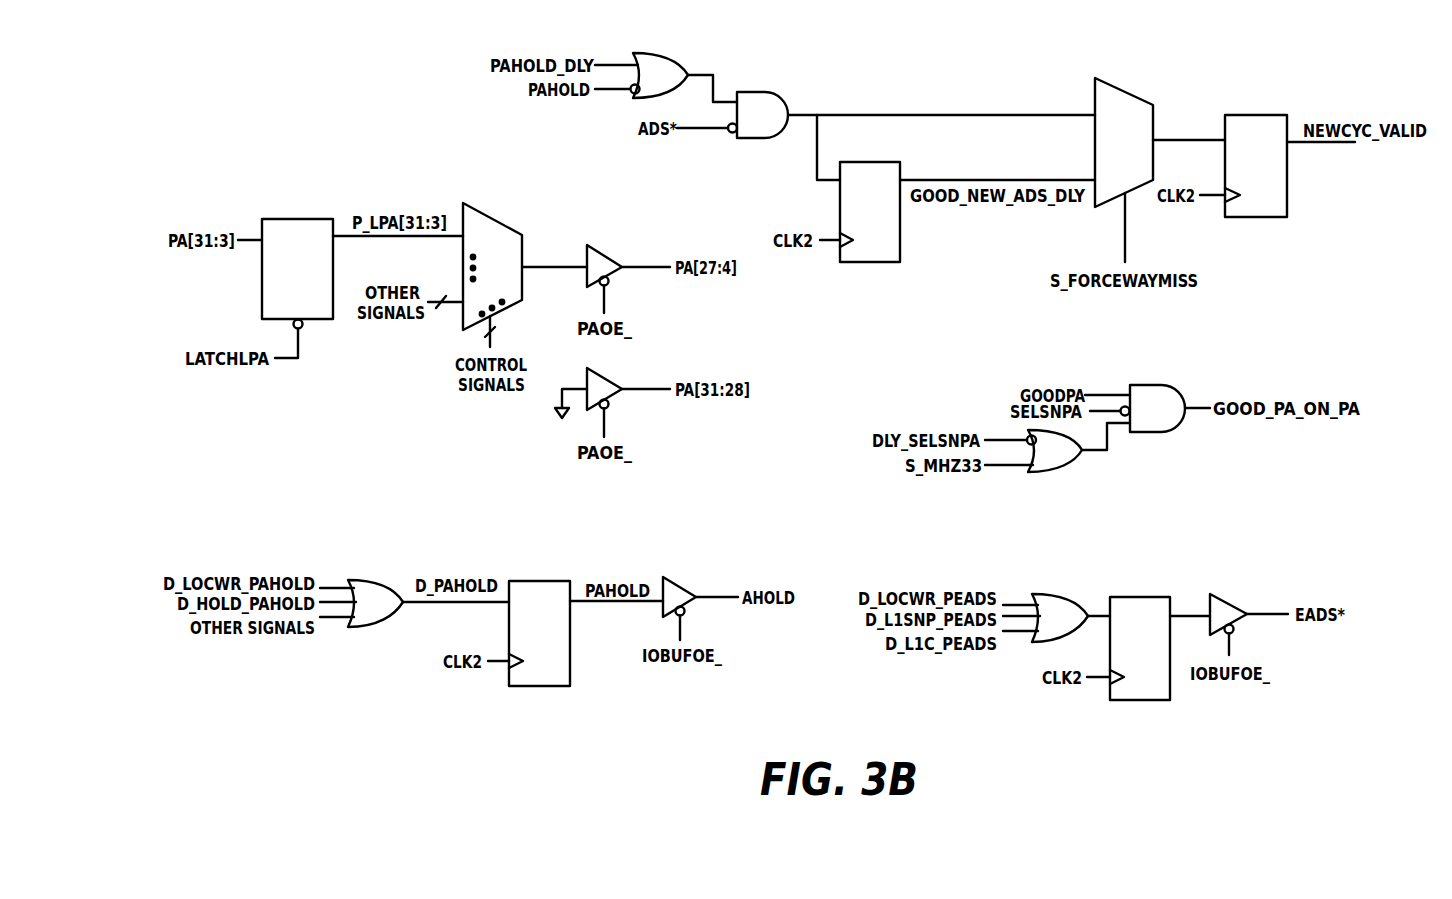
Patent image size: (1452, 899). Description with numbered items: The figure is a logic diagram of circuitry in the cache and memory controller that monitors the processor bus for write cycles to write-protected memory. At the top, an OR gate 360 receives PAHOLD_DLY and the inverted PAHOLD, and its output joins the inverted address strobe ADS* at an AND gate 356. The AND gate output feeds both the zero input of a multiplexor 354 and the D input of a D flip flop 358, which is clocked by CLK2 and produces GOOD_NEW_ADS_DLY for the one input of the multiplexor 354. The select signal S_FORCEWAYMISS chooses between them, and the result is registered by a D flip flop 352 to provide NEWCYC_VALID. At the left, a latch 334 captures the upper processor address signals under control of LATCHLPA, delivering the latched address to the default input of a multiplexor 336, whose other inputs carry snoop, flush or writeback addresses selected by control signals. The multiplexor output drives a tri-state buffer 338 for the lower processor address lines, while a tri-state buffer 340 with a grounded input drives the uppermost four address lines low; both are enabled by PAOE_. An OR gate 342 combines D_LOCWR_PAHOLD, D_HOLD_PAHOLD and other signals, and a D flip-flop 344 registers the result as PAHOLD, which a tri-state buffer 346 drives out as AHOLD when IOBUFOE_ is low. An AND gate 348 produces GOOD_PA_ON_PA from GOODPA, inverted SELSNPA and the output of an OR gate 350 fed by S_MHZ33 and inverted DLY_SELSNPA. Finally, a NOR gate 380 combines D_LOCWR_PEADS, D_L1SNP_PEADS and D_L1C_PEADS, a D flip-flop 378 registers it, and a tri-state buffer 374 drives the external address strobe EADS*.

The latch 334 is at (295, 219).
The multiplexor 336 is at (492, 215).
The tri-state buffer 338 is at (600, 248).
The tri-state buffer 340 is at (600, 372).
The OR gate 342 is at (372, 578).
The D flip-flop 344 is at (545, 581).
The tri-state buffer 346 is at (678, 578).
The AND gate 348 is at (1155, 432).
The OR gate 350 is at (1050, 472).
The D flip flop 352 is at (1250, 115).
The multiplexor 354 is at (1122, 92).
The AND gate 356 is at (757, 92).
The D flip flop 358 is at (872, 262).
The OR gate 360 is at (659, 52).
The tri-state buffer 374 is at (1227, 597).
The D flip-flop 378 is at (1147, 597).
The NOR gate 380 is at (1055, 590).